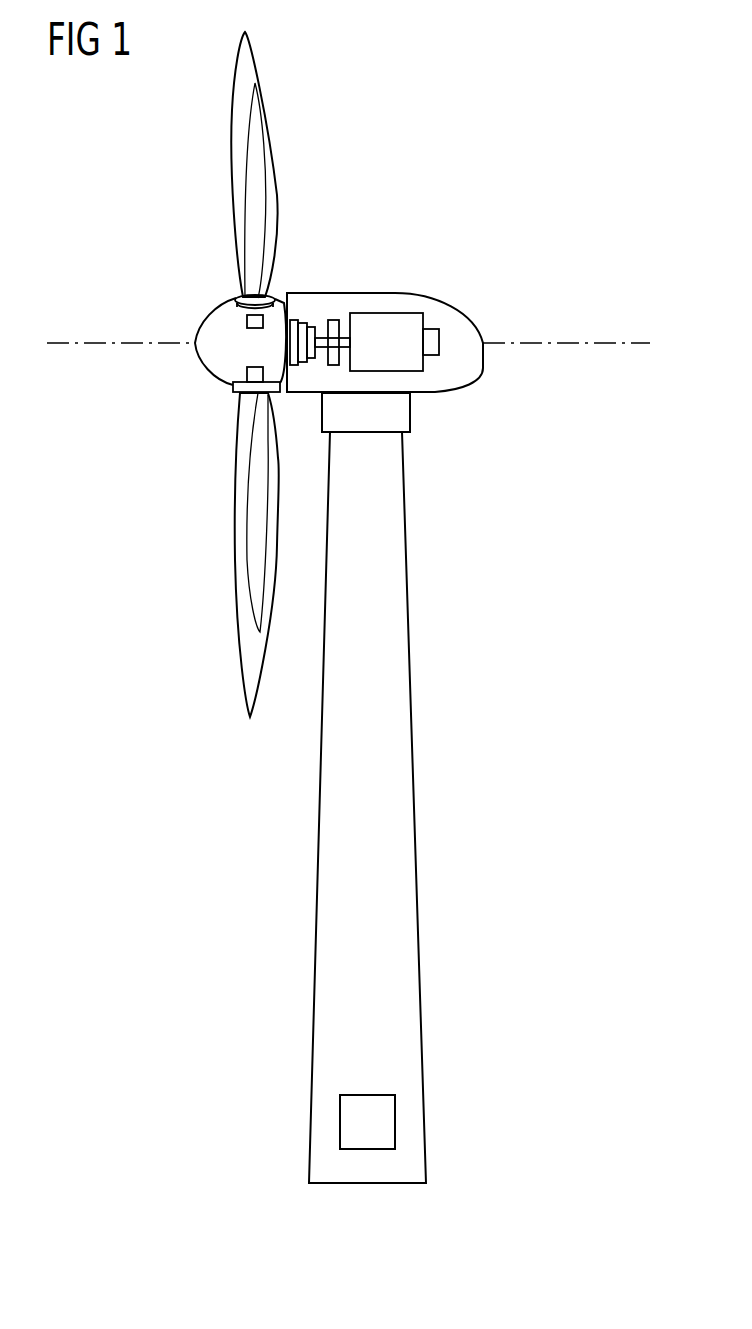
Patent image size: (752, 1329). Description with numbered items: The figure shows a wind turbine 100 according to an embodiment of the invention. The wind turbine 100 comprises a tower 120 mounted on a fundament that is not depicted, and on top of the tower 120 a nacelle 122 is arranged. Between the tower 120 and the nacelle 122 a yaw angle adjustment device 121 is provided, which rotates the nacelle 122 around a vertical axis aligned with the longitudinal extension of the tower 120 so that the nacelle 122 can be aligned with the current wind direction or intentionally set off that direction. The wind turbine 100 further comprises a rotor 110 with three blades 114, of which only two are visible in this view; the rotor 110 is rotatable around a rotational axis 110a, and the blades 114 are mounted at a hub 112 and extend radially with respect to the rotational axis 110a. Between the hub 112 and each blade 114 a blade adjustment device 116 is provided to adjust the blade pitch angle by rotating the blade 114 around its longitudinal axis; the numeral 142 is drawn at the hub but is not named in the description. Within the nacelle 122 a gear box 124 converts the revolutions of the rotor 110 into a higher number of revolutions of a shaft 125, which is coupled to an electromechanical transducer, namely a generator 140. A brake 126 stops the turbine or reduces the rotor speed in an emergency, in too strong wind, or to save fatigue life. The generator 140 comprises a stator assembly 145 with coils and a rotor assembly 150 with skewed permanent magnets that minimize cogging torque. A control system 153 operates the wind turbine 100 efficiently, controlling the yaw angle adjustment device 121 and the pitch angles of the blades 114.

The wind turbine 100 is at (533, 175).
The rotor 110 is at (172, 268).
The rotational axis 110a is at (90, 342).
The hub 112 is at (195, 358).
The blades 114 is at (232, 155).
The blade adjustment device 116 is at (240, 297).
The tower 120 is at (406, 541).
The yaw angle adjustment device 121 is at (410, 418).
The nacelle 122 is at (461, 316).
The gear box 124 is at (302, 330).
The shaft 125 is at (323, 346).
The brake 126 is at (333, 325).
The generator 140 is at (436, 368).
The pitch drive 142 is at (257, 367).
The stator assembly 145 is at (400, 313).
The rotor assembly 150 is at (440, 348).
The control system 153 is at (388, 1137).